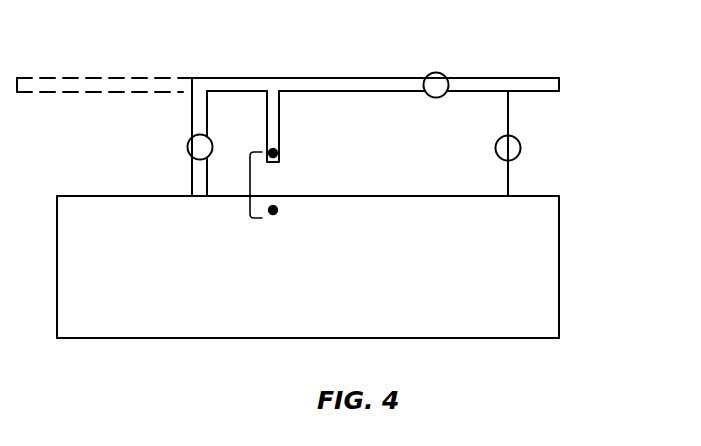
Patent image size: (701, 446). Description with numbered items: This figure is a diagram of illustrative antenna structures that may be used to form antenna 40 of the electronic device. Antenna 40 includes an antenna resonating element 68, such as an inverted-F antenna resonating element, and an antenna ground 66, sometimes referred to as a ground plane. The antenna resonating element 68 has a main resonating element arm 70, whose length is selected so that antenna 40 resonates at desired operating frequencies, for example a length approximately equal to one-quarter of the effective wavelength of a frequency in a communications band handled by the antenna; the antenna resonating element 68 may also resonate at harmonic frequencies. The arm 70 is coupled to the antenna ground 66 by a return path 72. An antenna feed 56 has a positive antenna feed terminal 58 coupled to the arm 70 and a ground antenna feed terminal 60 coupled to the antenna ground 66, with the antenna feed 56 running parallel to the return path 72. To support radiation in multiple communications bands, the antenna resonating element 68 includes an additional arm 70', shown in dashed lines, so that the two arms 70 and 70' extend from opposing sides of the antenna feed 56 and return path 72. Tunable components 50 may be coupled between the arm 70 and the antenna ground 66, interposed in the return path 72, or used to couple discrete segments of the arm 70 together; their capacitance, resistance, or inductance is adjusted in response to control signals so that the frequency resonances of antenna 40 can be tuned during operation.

The antenna 40 is at (643, 23).
The tunable components 50 is at (209, 138).
The antenna feed 56 is at (250, 192).
The positive antenna feed terminal 58 is at (278, 152).
The ground antenna feed terminal 60 is at (278, 210).
The antenna ground 66 is at (553, 266).
The antenna resonating element 68 is at (587, 48).
The arm 70 is at (375, 54).
The additional arm 70' is at (104, 56).
The return path 72 is at (185, 95).